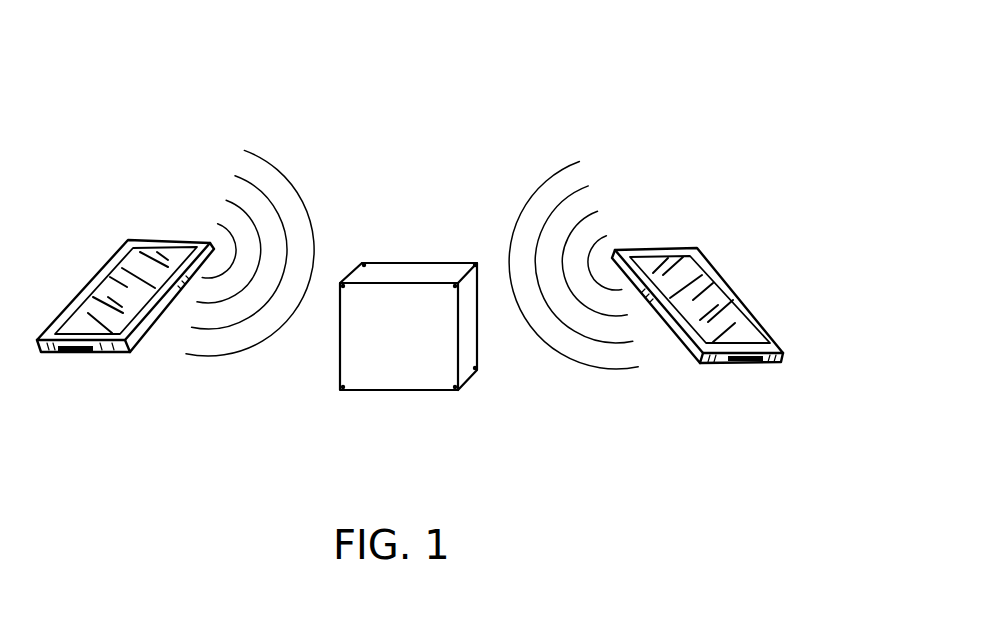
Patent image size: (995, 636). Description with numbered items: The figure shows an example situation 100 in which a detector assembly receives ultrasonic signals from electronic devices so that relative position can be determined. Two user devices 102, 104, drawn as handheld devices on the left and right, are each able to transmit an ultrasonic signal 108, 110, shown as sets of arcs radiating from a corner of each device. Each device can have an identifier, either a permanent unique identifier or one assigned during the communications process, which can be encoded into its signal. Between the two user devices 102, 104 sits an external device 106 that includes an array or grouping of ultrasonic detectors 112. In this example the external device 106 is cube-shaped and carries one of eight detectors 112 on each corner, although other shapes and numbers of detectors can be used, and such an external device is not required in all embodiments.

The example situation 100 is at (761, 98).
The user device 102 is at (127, 350).
The user device 104 is at (702, 363).
The external device 106 is at (378, 390).
The ultrasonic signal 108 is at (212, 206).
The ultrasonic signal 110 is at (618, 235).
The ultrasonic detectors 112 is at (478, 262).